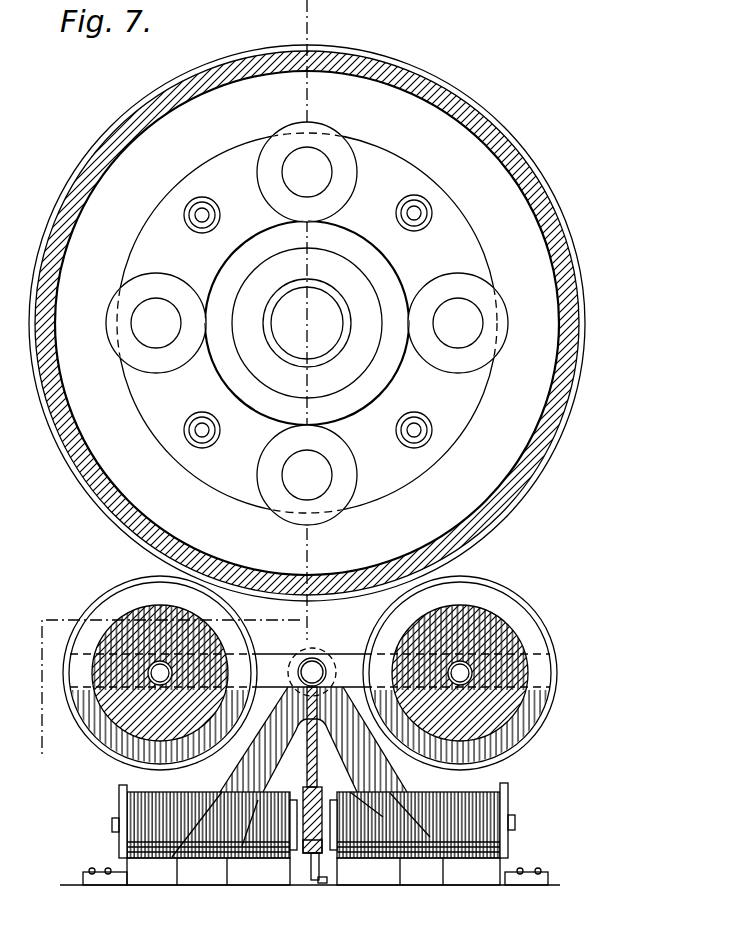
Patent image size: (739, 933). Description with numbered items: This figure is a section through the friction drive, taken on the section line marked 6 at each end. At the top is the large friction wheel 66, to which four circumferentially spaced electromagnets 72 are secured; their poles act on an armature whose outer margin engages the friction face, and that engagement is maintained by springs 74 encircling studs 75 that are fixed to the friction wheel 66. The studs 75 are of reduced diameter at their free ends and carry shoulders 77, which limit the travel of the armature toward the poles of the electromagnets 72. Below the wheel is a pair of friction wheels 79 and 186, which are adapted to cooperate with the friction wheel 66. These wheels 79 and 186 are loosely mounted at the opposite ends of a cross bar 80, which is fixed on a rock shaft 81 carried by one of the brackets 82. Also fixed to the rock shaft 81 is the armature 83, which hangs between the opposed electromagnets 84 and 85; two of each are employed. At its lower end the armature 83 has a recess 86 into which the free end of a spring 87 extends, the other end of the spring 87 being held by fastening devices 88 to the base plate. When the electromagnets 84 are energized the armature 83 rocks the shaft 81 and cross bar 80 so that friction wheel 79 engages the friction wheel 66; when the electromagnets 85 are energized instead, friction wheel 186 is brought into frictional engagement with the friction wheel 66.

The section line 6 is at (182, 385).
The friction wheel 66 is at (560, 457).
The electromagnets 72 is at (340, 146).
The springs 74 is at (403, 206).
The studs 75 is at (418, 222).
The shoulders 77 is at (432, 428).
The friction wheel 79 is at (66, 712).
The friction wheel 186 is at (557, 713).
The cross bar 80 is at (272, 668).
The rock shaft 81 is at (319, 665).
The bracket 82 is at (266, 764).
The armature 83 is at (306, 847).
The electromagnets 84 is at (157, 860).
The electromagnets 85 is at (472, 860).
The recess 86 is at (303, 855).
The spring 87 is at (316, 852).
The fastening devices 88 is at (324, 883).